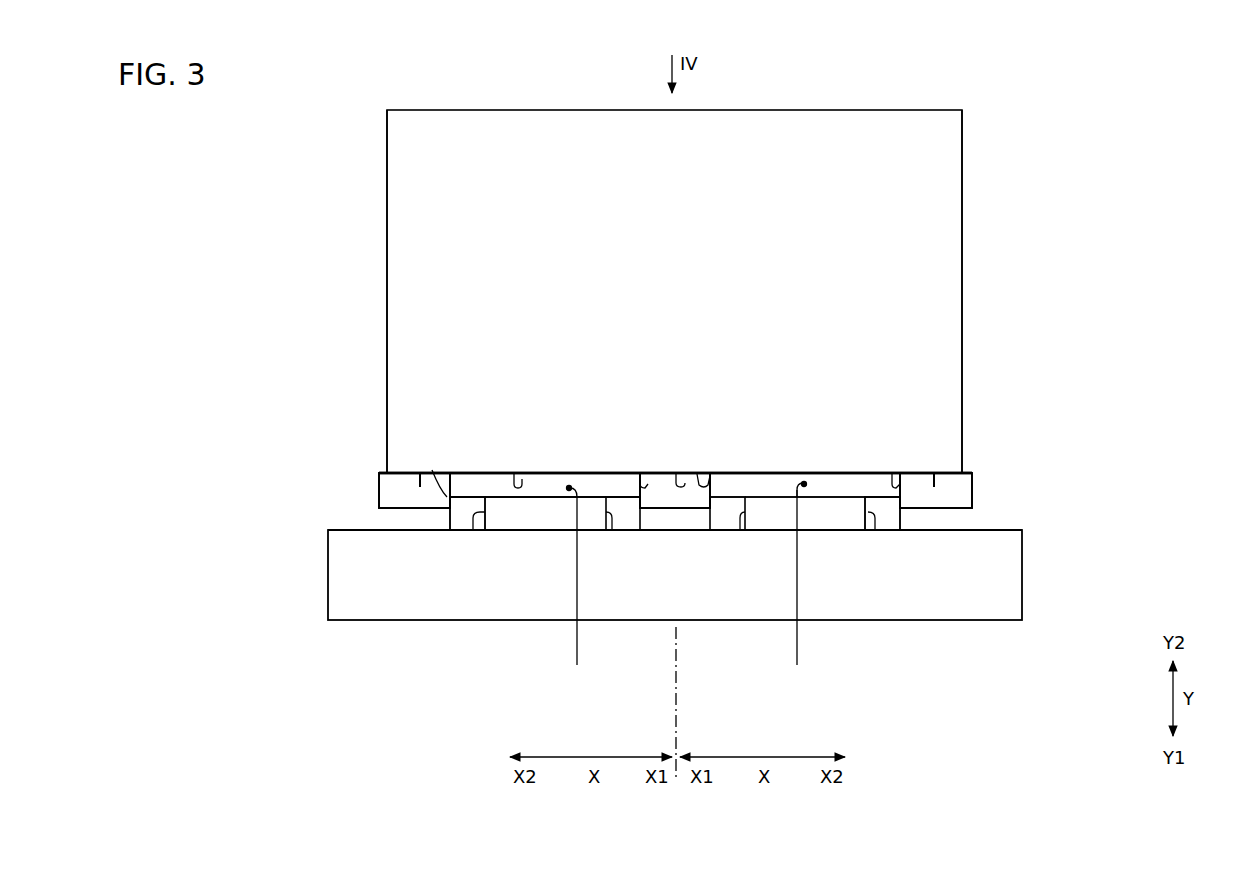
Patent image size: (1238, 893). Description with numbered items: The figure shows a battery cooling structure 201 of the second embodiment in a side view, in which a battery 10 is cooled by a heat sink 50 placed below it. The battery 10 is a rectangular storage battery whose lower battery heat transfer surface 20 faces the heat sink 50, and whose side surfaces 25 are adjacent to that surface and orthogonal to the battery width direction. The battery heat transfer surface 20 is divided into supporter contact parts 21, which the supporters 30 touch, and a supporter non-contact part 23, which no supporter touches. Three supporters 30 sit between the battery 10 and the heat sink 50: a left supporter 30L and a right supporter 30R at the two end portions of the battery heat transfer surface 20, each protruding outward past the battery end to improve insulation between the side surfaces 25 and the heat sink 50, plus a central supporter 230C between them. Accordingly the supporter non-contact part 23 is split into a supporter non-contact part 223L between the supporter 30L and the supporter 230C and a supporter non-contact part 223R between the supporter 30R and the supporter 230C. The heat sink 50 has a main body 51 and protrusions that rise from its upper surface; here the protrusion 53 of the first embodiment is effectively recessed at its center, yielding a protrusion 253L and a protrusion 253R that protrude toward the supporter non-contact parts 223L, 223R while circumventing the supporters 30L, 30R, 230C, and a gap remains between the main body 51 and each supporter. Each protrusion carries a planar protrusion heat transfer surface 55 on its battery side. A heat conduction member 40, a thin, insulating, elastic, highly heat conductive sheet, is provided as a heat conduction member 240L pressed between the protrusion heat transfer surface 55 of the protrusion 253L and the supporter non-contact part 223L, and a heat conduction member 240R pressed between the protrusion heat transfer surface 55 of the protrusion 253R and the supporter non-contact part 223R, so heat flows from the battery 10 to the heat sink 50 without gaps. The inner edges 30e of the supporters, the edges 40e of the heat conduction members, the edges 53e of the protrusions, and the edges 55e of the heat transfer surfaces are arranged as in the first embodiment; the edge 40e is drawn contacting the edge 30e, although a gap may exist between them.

The battery cooling structure 201 is at (332, 120).
The battery 10 is at (405, 217).
The side surface 25 is at (385, 290).
The battery heat transfer surface 20 is at (675, 386).
The supporter contact part 21 is at (1068, 463).
The supporter non-contact part 23 is at (656, 410).
The supporter non-contact part 223L is at (510, 440).
The supporter non-contact part 223R is at (844, 472).
The heat conduction member 40 is at (675, 398).
The heat conduction member 240L is at (560, 472).
The heat conduction member 240R is at (783, 472).
The supporter 30 is at (675, 490).
The supporter 30L is at (378, 497).
The supporter 30R is at (973, 490).
The supporter 230C is at (673, 497).
The edge 30e is at (455, 492).
The edge 40e is at (432, 468).
The heat sink 50 is at (345, 602).
The main body 51 is at (318, 566).
The protrusion 53 is at (675, 606).
The protrusion 253L is at (530, 508).
The protrusion 253R is at (836, 508).
The edge 53e is at (473, 530).
The protrusion heat transfer surface 55 is at (688, 591).
The edge 55e is at (477, 487).